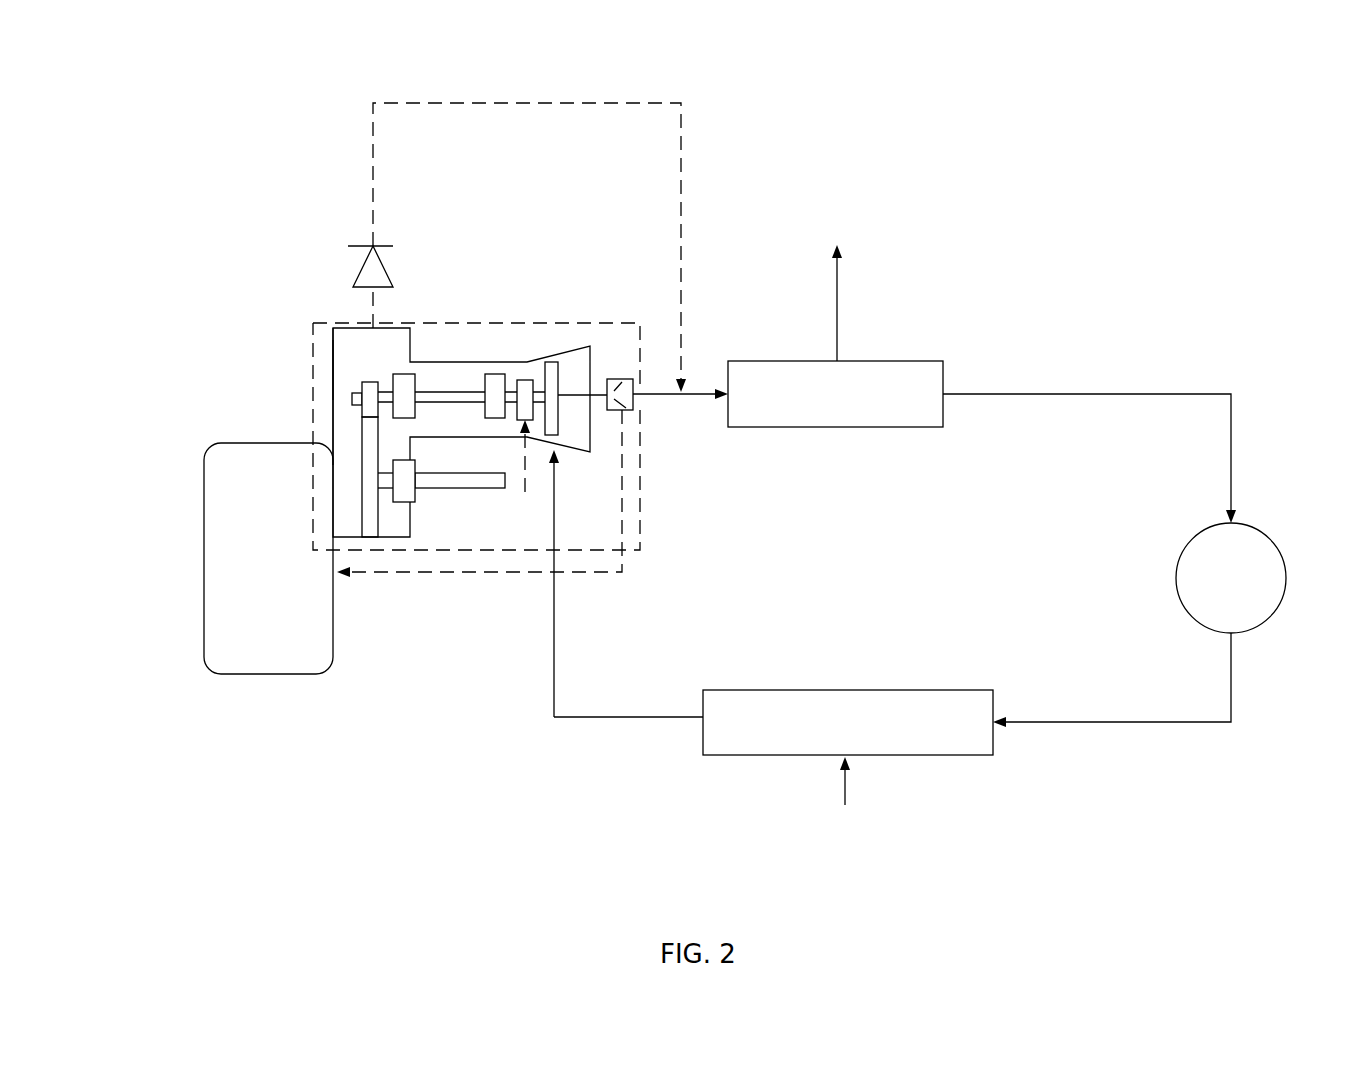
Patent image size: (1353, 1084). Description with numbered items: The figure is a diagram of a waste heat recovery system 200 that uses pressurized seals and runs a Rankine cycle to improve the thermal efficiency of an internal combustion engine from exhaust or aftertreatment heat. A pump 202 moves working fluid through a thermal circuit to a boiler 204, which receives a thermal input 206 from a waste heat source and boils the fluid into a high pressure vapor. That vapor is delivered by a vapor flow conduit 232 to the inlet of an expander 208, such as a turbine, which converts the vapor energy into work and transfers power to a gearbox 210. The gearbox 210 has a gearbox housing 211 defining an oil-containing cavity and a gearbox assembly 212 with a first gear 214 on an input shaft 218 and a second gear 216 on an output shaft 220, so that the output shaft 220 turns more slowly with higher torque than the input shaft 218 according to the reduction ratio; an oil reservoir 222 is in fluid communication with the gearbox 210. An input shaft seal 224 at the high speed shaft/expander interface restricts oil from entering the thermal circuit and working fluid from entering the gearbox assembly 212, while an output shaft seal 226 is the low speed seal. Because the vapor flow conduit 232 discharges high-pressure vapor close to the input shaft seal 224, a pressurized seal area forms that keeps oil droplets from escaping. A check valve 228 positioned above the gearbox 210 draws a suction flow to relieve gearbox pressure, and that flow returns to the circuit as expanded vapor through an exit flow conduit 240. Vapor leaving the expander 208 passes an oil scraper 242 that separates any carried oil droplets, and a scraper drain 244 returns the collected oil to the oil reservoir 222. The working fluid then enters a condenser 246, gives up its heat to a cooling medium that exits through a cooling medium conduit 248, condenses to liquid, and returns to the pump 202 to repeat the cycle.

The waste heat recovery system 200 is at (186, 114).
The pump 202 is at (1180, 580).
The boiler 204 is at (995, 750).
The thermal input 206 is at (845, 787).
The expander 208 is at (547, 344).
The gearbox 210 is at (329, 320).
The gearbox housing 211 is at (455, 362).
The gearbox assembly 212 is at (336, 367).
The first gear 214 is at (360, 389).
The second gear 216 is at (368, 540).
The input shaft 218 is at (438, 404).
The output shaft 220 is at (455, 487).
The oil reservoir 222 is at (205, 478).
The input shaft seal 224 is at (517, 378).
The output shaft seal 226 is at (417, 493).
The check valve 228 is at (357, 278).
The vapor flow conduit 232 is at (543, 493).
The exit flow conduit 240 is at (372, 175).
The oil scraper 242 is at (642, 402).
The scraper drain 244 is at (623, 527).
The condenser 246 is at (947, 412).
The cooling medium conduit 248 is at (835, 305).